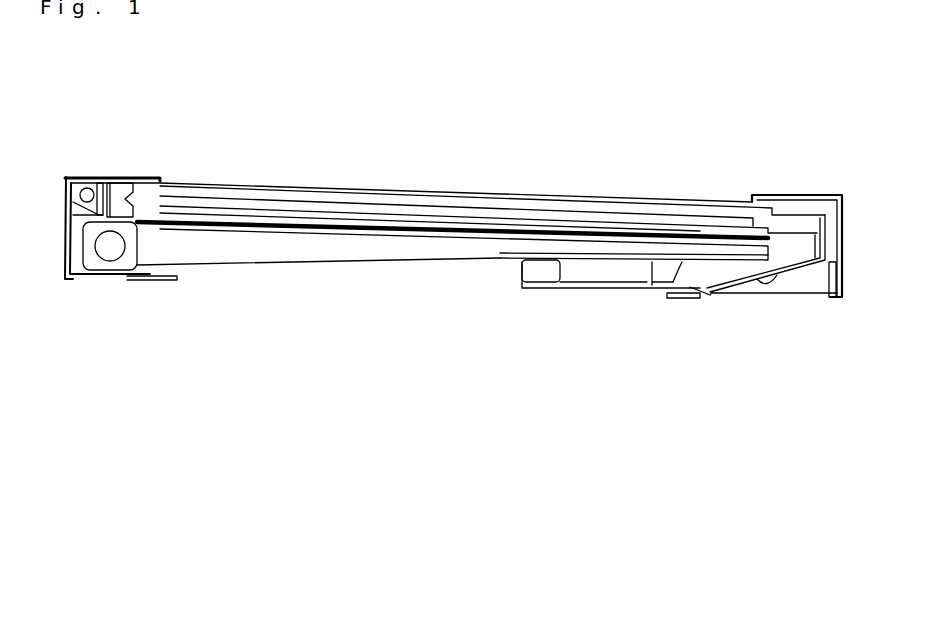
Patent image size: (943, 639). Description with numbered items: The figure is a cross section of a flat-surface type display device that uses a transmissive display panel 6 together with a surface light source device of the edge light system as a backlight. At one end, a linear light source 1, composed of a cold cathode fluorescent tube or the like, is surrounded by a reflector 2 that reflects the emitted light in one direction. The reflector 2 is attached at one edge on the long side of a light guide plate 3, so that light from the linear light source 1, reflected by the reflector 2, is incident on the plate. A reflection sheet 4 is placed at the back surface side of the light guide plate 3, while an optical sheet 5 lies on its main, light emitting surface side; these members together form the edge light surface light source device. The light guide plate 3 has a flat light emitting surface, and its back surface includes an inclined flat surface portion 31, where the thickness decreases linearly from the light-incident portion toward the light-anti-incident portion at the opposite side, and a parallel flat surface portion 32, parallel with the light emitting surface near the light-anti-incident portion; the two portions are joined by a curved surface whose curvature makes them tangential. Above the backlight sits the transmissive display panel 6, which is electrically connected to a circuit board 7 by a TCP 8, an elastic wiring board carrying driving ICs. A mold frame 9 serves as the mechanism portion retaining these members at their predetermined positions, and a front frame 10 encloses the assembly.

The linear light source 1 is at (110, 243).
The reflector 2 is at (77, 277).
The light guide plate 3 is at (178, 245).
The reflection sheet 4 is at (292, 262).
The optical sheet 5 is at (275, 185).
The transmissive display panel 6 is at (420, 190).
The circuit board 7 is at (592, 288).
The TCP 8 is at (797, 276).
The mold frame 9 is at (528, 268).
The front frame 10 is at (78, 178).
The inclined flat surface portion 31 is at (357, 262).
The parallel flat surface portion 32 is at (647, 262).